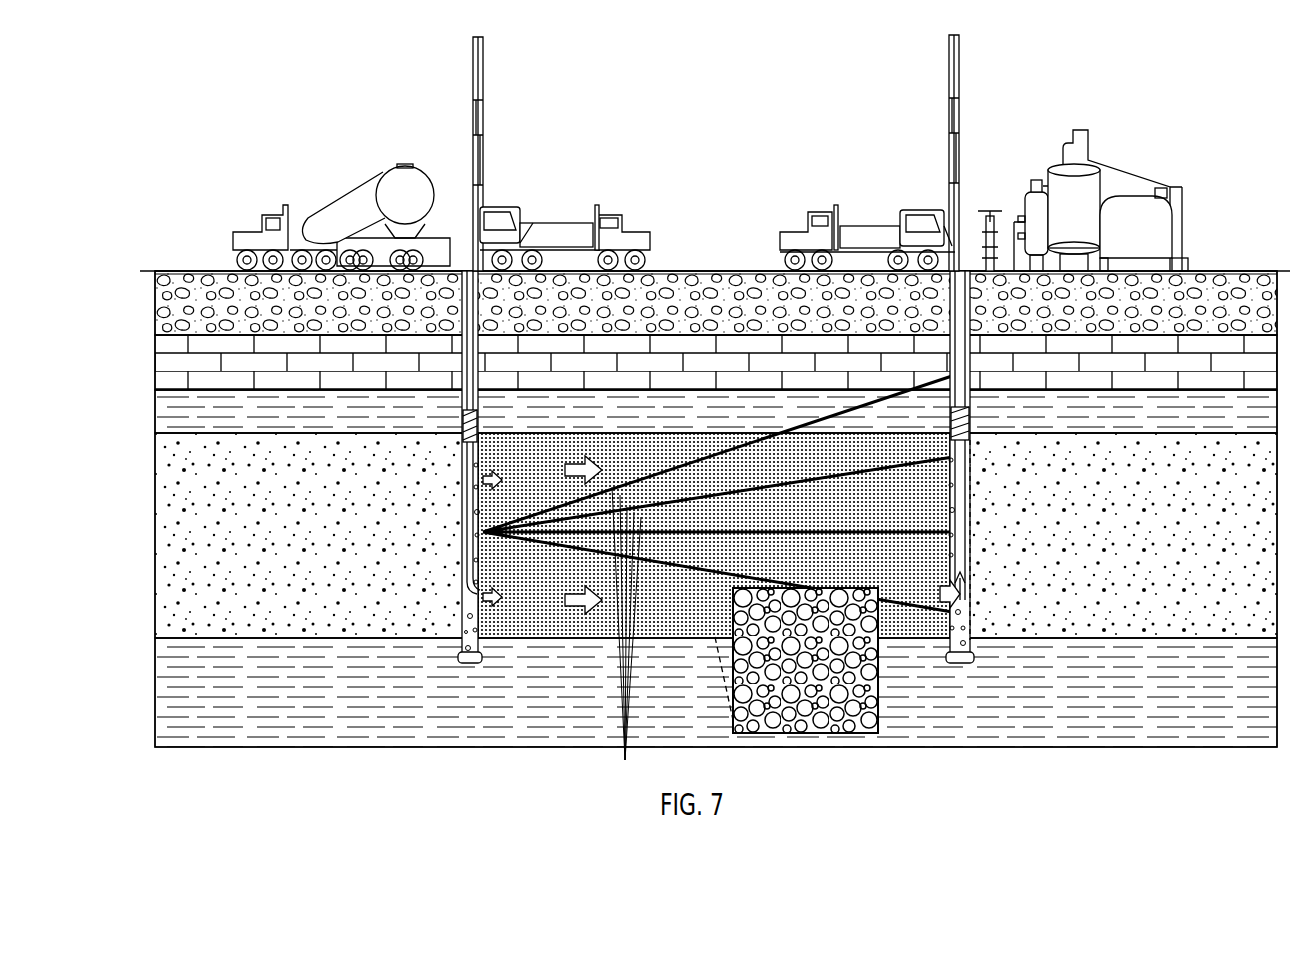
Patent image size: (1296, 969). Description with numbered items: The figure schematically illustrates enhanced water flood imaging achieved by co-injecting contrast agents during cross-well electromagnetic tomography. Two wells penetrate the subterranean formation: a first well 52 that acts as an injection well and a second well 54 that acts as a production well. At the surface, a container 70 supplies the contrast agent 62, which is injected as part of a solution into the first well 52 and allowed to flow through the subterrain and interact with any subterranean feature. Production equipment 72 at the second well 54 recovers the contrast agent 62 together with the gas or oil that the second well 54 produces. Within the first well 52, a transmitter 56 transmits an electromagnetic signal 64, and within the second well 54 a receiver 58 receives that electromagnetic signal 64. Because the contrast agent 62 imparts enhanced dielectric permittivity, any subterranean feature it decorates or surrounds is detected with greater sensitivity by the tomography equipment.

The first well 52 is at (493, 163).
The second well 54 is at (933, 138).
The transmitter 56 is at (450, 543).
The receiver 58 is at (982, 505).
The contrast agent 62 is at (825, 733).
The electromagnetic signal 64 is at (627, 640).
The container 70 is at (340, 210).
The production equipment 72 is at (1138, 213).